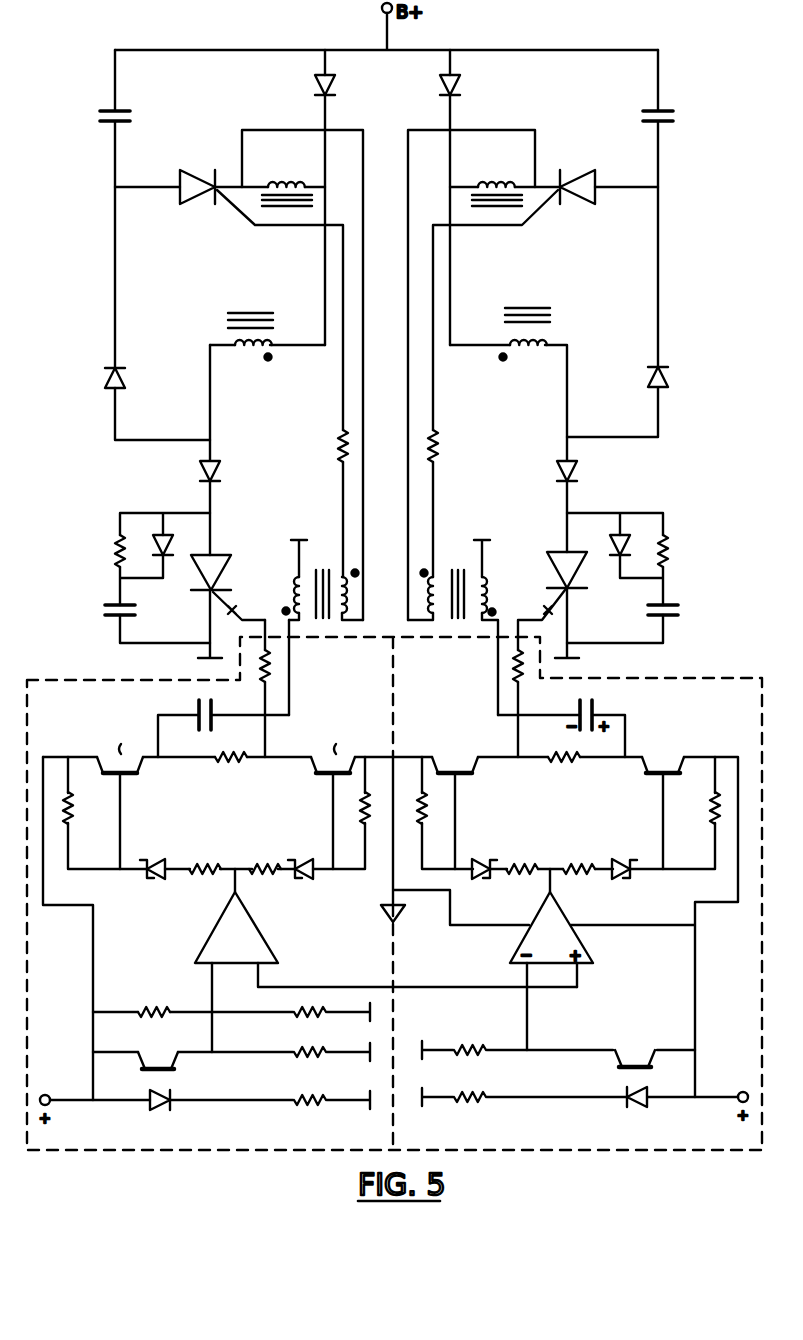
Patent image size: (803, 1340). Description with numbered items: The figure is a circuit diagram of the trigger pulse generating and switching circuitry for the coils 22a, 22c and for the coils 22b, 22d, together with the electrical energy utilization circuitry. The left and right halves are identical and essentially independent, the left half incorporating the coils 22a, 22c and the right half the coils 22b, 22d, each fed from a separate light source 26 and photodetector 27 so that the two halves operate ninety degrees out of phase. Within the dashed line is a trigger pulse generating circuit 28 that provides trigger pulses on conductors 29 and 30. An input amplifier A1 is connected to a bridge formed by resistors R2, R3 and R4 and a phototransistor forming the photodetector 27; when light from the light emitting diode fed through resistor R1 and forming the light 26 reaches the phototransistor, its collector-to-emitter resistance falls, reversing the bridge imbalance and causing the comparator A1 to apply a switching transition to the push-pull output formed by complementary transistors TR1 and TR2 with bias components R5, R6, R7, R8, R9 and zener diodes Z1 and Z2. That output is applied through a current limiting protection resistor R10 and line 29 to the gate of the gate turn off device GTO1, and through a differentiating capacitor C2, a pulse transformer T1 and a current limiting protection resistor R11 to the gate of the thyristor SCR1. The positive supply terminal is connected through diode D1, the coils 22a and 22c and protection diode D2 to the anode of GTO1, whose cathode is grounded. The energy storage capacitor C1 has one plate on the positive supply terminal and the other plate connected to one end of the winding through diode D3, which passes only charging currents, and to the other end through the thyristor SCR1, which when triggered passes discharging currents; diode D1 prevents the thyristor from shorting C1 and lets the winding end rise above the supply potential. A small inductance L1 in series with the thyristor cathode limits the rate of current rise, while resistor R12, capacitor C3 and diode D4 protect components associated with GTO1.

The coil 22a is at (267, 354).
The coil 22c is at (246, 355).
The coil 22b is at (505, 351).
The coil 22d is at (530, 371).
The conductor 29 is at (246, 616).
The conductor 30 is at (292, 671).
The trigger pulse generating circuit 28 is at (34, 1006).
The photodetector 27 is at (180, 1054).
The light source 26 is at (158, 1106).
The capacitor C1 is at (102, 117).
The diode D1 is at (311, 85).
The protection diode D2 is at (195, 472).
The diode D3 is at (99, 379).
The diode D4 is at (174, 534).
The inductance L1 is at (287, 180).
The silicon controlled rectifier SCR1 is at (182, 201).
The current limiting protection resistor R11 is at (322, 446).
The resistor R12 is at (99, 551).
The capacitor C3 is at (106, 610).
The gate turn off device GTO1 is at (229, 562).
The pulse transformer T1 is at (316, 580).
The current limiting protection resistor R10 is at (246, 678).
The differentiating capacitor C2 is at (199, 708).
The transistor TR1 is at (118, 796).
The transistor TR2 is at (333, 796).
The bias resistor R9 is at (231, 771).
The bias resistor R7 is at (83, 808).
The bias resistor R8 is at (351, 808).
The zener diode Z1 is at (151, 856).
The zener diode Z2 is at (302, 854).
The bias resistor R5 is at (205, 857).
The bias resistor R6 is at (265, 857).
The input amplifier A1 is at (242, 928).
The resistor R3 is at (154, 1000).
The resistor R4 is at (310, 1027).
The resistor R2 is at (310, 1066).
The resistor R1 is at (310, 1112).